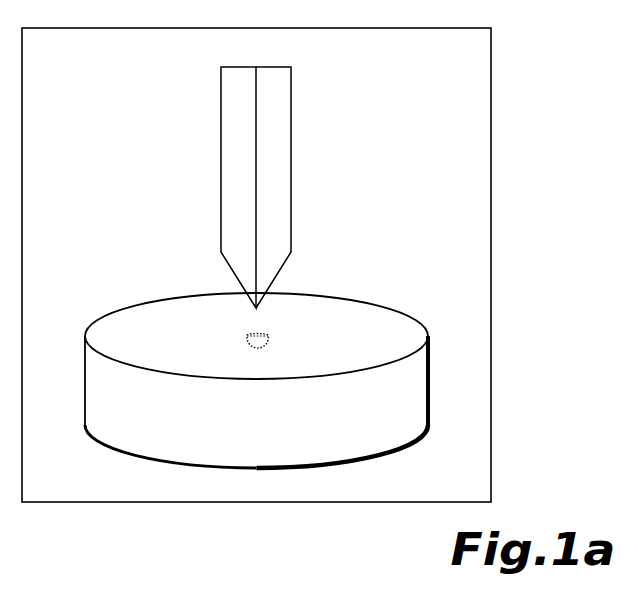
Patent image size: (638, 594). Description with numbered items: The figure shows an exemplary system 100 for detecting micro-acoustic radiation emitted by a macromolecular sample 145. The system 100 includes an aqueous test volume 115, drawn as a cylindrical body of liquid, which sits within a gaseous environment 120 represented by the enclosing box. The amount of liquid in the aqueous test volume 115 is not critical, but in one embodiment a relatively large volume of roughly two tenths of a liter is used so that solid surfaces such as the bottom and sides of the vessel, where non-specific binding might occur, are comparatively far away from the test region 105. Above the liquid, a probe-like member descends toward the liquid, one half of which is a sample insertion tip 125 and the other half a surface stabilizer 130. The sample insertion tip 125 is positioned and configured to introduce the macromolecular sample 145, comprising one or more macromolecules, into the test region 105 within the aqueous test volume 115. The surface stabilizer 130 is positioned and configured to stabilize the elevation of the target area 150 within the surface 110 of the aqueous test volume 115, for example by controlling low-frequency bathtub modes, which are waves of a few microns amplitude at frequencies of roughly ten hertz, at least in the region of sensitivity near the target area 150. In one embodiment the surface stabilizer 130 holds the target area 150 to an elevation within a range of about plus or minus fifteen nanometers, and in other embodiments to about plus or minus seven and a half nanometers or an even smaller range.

The system 100 is at (502, 58).
The test region 105 is at (248, 337).
The surface 110 is at (123, 325).
The aqueous test volume 115 is at (430, 381).
The gaseous environment 120 is at (491, 247).
The sample insertion tip 125 is at (221, 130).
The surface stabilizer 130 is at (291, 130).
The macromolecular sample 145 is at (268, 340).
The target area 150 is at (250, 333).